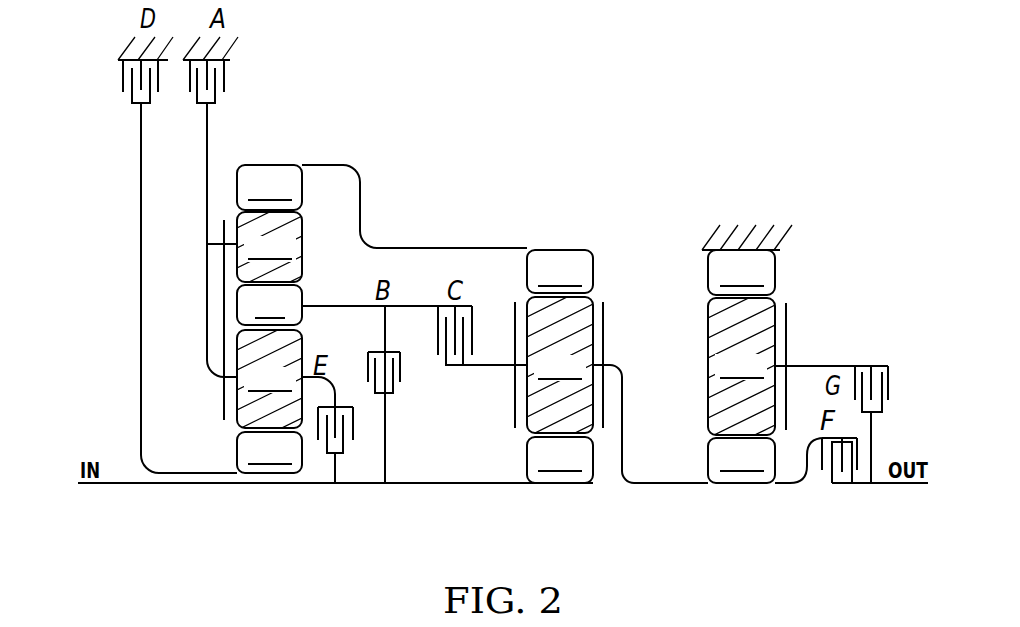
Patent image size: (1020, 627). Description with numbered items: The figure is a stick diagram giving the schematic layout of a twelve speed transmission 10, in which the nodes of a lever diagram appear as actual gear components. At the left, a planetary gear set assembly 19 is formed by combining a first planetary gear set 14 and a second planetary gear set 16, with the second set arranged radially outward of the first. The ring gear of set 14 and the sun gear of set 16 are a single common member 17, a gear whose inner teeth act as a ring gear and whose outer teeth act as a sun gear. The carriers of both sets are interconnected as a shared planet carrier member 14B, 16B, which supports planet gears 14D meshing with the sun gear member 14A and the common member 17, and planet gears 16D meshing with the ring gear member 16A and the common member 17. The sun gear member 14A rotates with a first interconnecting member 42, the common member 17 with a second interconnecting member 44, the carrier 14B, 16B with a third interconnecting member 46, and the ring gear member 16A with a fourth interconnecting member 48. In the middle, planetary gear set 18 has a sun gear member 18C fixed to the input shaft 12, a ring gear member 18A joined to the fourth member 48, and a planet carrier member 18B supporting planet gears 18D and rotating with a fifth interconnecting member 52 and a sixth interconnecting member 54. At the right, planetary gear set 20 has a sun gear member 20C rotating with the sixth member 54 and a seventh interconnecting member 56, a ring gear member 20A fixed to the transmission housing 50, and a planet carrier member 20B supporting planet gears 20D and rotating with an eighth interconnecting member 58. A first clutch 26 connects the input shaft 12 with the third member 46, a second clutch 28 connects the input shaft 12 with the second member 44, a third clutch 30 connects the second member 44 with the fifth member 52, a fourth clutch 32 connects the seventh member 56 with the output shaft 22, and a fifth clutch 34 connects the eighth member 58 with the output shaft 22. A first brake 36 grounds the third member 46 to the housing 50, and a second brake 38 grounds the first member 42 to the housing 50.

The twelve speed transmission 10 is at (823, 137).
The input shaft 12 is at (95, 485).
The first planetary gear set 14 is at (238, 491).
The sun gear member 14A is at (269, 452).
The planet carrier member 14B is at (224, 318).
The planet gears 14D is at (269, 384).
The second planetary gear set 16 is at (329, 190).
The ring gear member 16A is at (269, 187).
The planet carrier member 16B is at (188, 329).
The planet gears 16D is at (269, 252).
The common member 17 is at (269, 305).
The planetary gear set 18 is at (544, 229).
The ring gear member 18A is at (560, 271).
The planet gear carrier member 18B is at (513, 418).
The sun gear member 18C is at (560, 460).
The planet gears 18D is at (560, 370).
The planetary gear set assembly 19 is at (277, 150).
The planetary gear set 20 is at (719, 490).
The ring gear member 20A is at (741, 272).
The planet gear carrier member 20B is at (790, 326).
The sun gear member 20C is at (741, 460).
The planet gears 20D is at (741, 371).
The output shaft 22 is at (920, 485).
The first clutch 26 is at (346, 452).
The second clutch 28 is at (403, 377).
The third clutch 30 is at (472, 320).
The fourth clutch 32 is at (858, 453).
The fifth clutch 34 is at (910, 365).
The first brake 36 is at (224, 84).
The second brake 38 is at (123, 80).
The first interconnecting member 42 is at (141, 196).
The second interconnecting member 44 is at (408, 305).
The third interconnecting member 46 is at (207, 143).
The fourth interconnecting member 48 is at (445, 248).
The transmission housing 50 is at (130, 46).
The fifth interconnecting member 52 is at (483, 368).
The sixth interconnecting member 54 is at (627, 413).
The seventh interconnecting member 56 is at (804, 470).
The eighth interconnecting member 58 is at (803, 366).